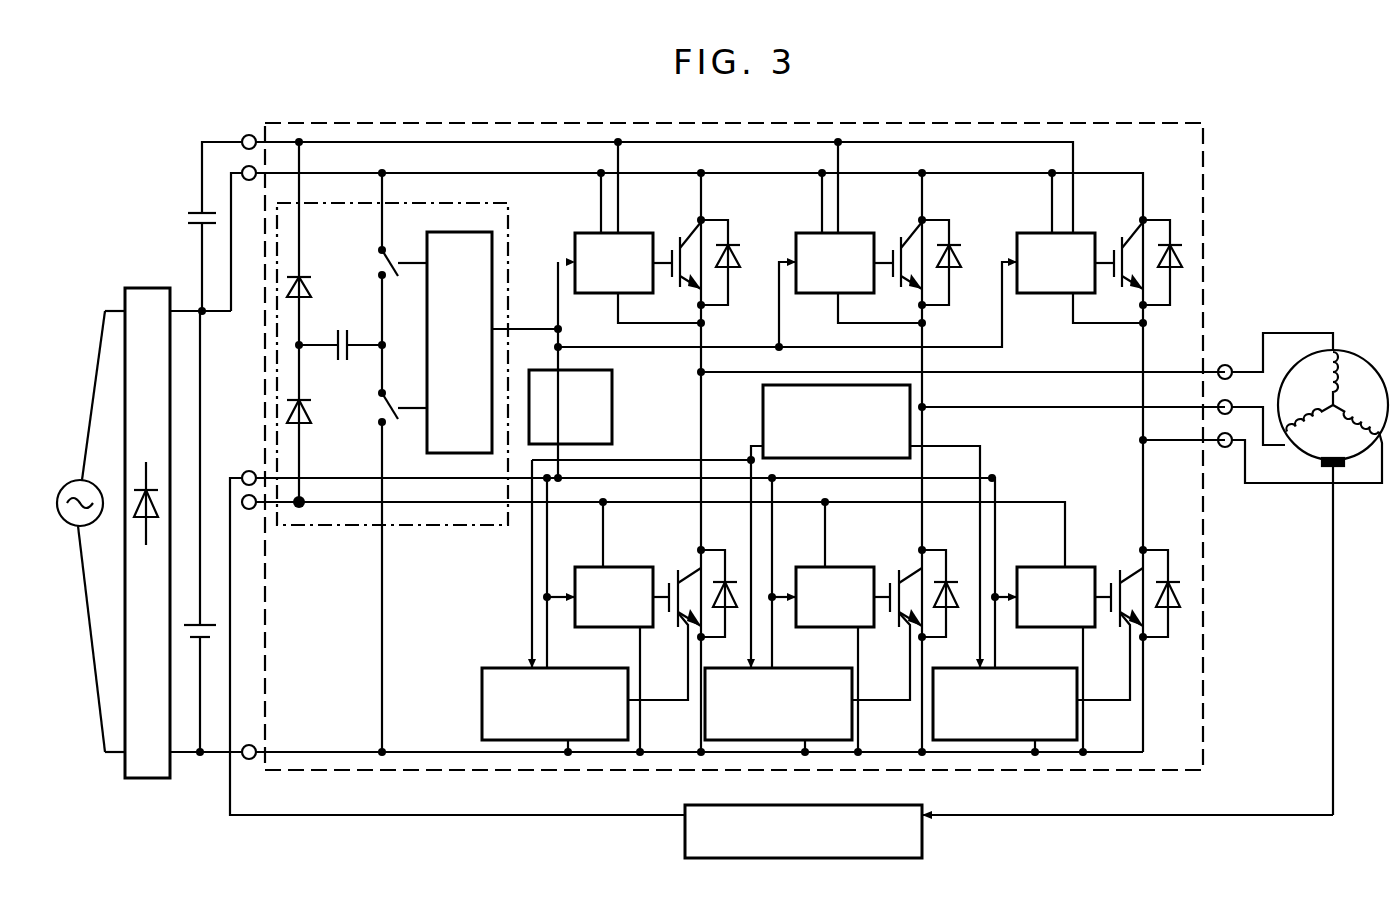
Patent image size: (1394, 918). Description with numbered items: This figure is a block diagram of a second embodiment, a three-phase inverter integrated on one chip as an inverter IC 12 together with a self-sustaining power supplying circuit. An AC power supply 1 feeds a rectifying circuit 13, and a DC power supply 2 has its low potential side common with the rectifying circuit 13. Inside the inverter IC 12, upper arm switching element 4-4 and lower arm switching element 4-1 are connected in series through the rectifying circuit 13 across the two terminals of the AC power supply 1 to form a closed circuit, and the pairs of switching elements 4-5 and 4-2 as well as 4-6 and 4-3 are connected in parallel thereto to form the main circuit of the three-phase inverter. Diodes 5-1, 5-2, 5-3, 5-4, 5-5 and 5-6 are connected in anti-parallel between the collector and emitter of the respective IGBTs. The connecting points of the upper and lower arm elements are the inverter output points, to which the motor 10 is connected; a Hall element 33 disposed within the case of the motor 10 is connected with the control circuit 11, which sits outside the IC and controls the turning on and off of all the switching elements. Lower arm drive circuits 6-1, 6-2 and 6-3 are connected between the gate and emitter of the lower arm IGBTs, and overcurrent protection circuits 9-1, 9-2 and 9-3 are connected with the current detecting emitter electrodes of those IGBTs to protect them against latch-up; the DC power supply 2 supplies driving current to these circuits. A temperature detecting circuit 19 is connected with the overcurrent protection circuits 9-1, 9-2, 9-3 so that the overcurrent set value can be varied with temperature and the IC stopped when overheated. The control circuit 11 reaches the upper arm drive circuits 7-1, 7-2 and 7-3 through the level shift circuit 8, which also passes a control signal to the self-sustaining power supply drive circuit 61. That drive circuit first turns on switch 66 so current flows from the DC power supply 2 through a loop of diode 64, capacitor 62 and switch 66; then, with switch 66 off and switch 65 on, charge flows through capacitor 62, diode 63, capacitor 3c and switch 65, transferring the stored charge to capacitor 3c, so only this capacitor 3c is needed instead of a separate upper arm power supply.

The AC power supply 1 is at (70, 526).
The DC power supply 2 is at (186, 638).
The capacitor 3c is at (191, 217).
The rectifying circuit 13 is at (170, 380).
The inverter IC 12 is at (1203, 172).
The self-sustaining power supply drive circuit 61 is at (440, 232).
The capacitor 62 is at (342, 330).
The diode 63 is at (314, 282).
The diode 64 is at (314, 418).
The switch 65 is at (392, 282).
The switch 66 is at (394, 424).
The level shift circuit 8 is at (614, 393).
The temperature detecting circuit 19 is at (762, 409).
The upper arm drive circuit 7-1 is at (576, 233).
The upper arm drive circuit 7-2 is at (797, 233).
The upper arm drive circuit 7-3 is at (1020, 233).
The switching element 4-1 is at (676, 582).
The switching element 4-2 is at (896, 582).
The switching element 4-3 is at (1121, 582).
The switching element 4-4 is at (668, 252).
The switching element 4-5 is at (889, 252).
The switching element 4-6 is at (1122, 252).
The diode 5-1 is at (744, 594).
The diode 5-2 is at (965, 594).
The diode 5-3 is at (1187, 594).
The diode 5-4 is at (742, 256).
The diode 5-5 is at (963, 256).
The diode 5-6 is at (1185, 255).
The lower arm drive circuit 6-1 is at (582, 567).
The lower arm drive circuit 6-2 is at (804, 567).
The lower arm drive circuit 6-3 is at (1026, 567).
The overcurrent protection circuit 9-1 is at (606, 666).
The overcurrent protection circuit 9-2 is at (828, 666).
The overcurrent protection circuit 9-3 is at (1054, 666).
The motor 10 is at (1368, 356).
The Hall element 33 is at (1319, 462).
The control circuit 11 is at (922, 842).